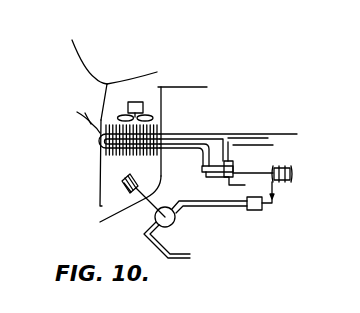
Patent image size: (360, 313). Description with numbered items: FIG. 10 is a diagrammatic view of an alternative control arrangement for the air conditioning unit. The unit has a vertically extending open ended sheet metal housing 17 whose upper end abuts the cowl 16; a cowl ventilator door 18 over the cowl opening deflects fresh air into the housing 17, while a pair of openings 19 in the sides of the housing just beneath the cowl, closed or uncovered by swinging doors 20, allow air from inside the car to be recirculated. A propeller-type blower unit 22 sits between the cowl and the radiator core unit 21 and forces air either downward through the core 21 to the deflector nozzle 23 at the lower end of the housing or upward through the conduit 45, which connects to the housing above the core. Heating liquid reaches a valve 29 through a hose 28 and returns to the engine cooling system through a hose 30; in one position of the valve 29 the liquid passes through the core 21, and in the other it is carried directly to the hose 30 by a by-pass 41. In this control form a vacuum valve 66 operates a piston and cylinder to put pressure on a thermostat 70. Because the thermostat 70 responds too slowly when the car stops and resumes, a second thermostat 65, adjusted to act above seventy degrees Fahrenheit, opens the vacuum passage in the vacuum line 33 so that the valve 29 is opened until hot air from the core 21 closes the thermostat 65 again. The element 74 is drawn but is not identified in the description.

The cowl 16 is at (100, 78).
The cowl ventilator door 18 is at (147, 70).
The swinging doors 20 is at (105, 90).
The housing 17 is at (100, 182).
The blower unit 22 is at (141, 101).
The openings 19 is at (172, 99).
The conduit 45 is at (82, 120).
The radiator core unit 21 is at (101, 141).
The hose 30 is at (278, 132).
The valve 29 is at (234, 168).
The by-pass 41 is at (260, 144).
The hose 28 is at (243, 181).
The thermostat 70 is at (293, 174).
The control unit 74 is at (268, 207).
The vacuum valve 66 is at (176, 219).
The vacuum line 33 is at (188, 253).
The thermostat 65 is at (127, 176).
The deflector nozzle 23 is at (100, 222).